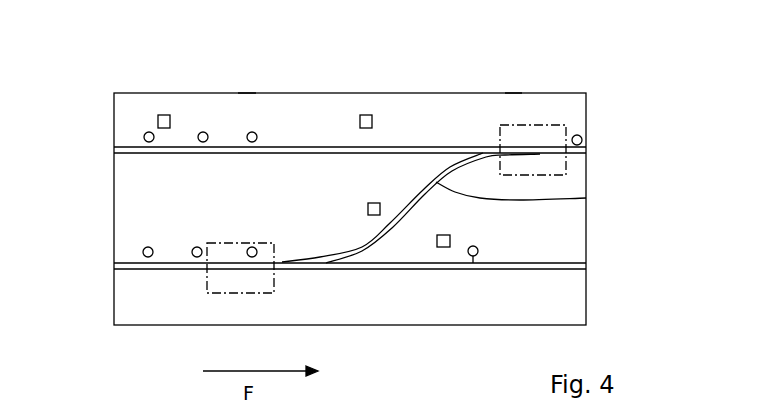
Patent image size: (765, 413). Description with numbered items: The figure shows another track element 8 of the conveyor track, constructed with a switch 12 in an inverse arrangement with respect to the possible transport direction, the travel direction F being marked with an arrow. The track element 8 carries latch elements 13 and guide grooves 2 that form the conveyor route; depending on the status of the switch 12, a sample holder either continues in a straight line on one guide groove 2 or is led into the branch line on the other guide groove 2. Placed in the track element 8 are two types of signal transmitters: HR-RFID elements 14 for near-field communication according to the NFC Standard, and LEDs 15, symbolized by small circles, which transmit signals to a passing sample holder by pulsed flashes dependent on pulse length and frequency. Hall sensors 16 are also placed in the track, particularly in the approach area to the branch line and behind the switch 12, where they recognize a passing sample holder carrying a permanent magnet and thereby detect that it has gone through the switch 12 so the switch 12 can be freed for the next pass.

The guide groove 2 is at (297, 147).
The track element 8 is at (427, 110).
The switch 12 is at (360, 250).
The latch element 13 is at (247, 93).
The HR-RFID element 14 is at (556, 134).
The LED 15 is at (203, 131).
The Hall sensor 16 is at (163, 114).